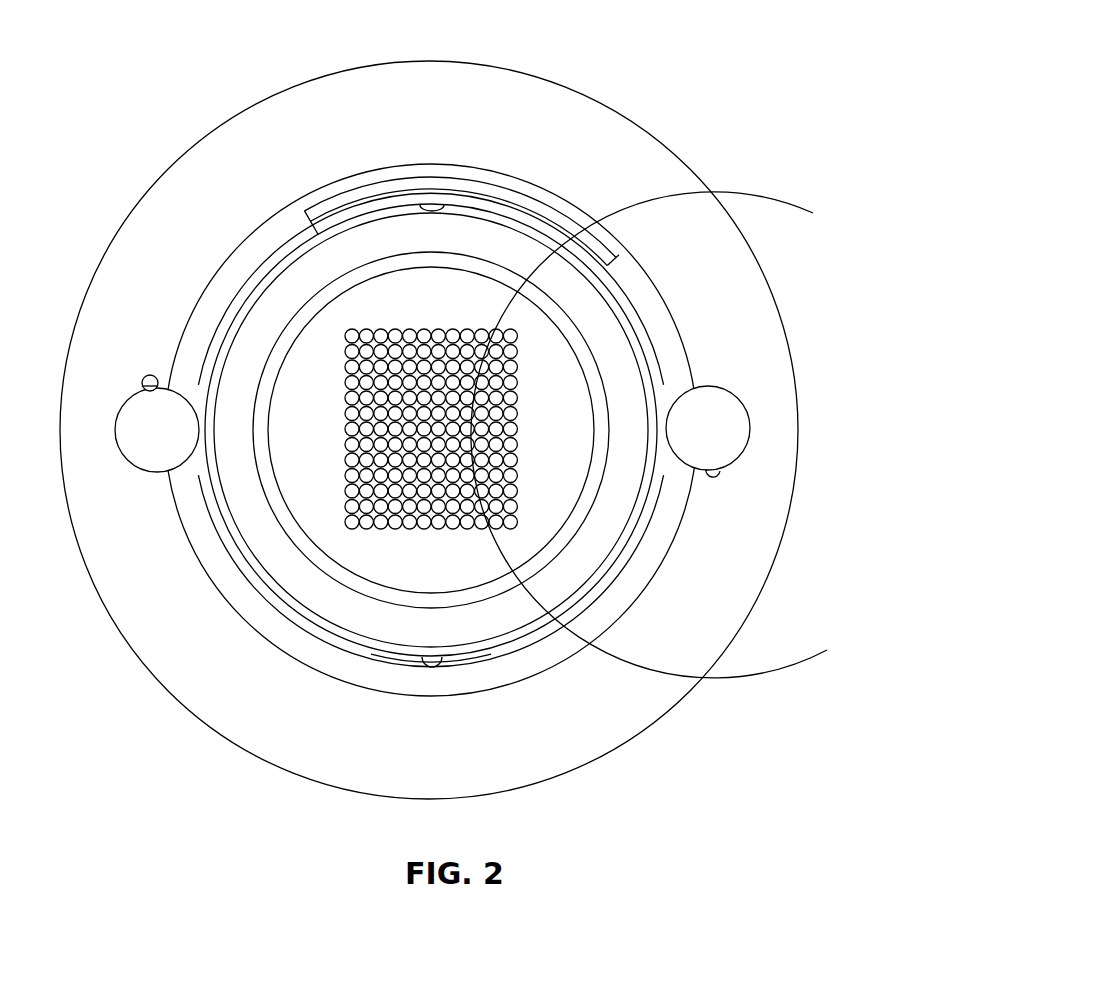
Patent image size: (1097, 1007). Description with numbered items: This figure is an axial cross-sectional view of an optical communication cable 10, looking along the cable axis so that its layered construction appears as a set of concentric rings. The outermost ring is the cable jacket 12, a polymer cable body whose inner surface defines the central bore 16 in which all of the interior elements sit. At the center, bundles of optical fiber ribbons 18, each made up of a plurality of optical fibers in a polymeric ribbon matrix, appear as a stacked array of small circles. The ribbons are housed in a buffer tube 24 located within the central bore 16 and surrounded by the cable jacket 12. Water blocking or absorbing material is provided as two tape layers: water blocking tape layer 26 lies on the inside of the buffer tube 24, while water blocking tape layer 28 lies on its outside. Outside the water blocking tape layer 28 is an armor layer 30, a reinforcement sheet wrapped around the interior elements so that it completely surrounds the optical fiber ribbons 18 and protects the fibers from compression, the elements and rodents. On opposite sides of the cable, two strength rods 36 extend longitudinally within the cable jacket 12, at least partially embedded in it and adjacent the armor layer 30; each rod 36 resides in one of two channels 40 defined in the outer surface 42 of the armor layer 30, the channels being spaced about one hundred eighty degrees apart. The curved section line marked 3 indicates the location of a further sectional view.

The cable 10 is at (445, 403).
The cable jacket 12 is at (578, 128).
The central bore 16 is at (474, 557).
The optical fiber ribbons 18 is at (335, 453).
The buffer tube 24 is at (617, 513).
The water blocking tape layer 26 is at (590, 490).
The water blocking tape layer 28 is at (622, 543).
The armor layer 30 is at (658, 308).
The strength rods 36 is at (727, 415).
The channels 40 is at (680, 449).
The outer surface 42 is at (690, 341).
The section line 3- 3 is at (660, 435).